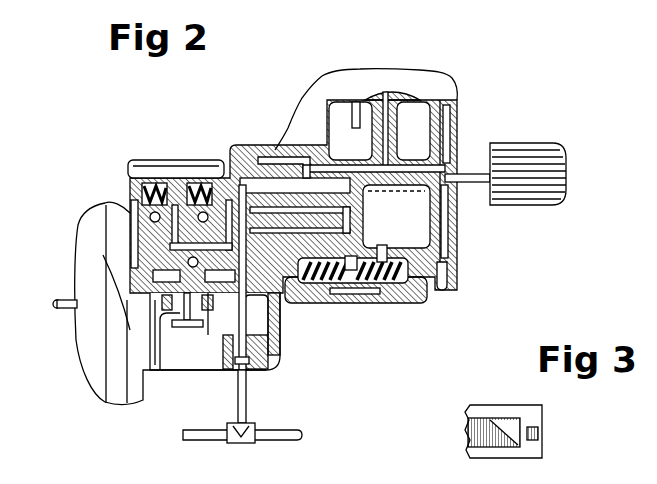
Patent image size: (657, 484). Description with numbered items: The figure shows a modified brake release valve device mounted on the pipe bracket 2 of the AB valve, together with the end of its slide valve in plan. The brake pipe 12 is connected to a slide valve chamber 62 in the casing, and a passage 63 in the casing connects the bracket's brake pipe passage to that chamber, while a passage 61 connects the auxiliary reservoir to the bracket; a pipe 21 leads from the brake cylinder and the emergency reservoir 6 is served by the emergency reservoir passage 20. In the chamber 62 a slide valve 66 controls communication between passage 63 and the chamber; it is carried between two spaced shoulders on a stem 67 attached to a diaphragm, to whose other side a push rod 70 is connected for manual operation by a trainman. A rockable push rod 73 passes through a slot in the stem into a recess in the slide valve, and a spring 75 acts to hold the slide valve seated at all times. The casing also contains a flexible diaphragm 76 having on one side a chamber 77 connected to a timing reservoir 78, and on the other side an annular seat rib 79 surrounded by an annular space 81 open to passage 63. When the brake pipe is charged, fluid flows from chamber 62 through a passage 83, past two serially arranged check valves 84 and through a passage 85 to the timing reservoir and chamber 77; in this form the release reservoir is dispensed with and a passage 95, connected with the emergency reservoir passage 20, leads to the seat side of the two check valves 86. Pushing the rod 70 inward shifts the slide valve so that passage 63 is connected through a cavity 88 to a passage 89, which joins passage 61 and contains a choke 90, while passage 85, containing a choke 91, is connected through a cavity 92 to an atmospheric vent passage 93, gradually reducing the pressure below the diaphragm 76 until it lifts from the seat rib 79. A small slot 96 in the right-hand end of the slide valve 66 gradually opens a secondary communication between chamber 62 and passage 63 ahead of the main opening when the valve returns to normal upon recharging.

In FIG. 2, the pipe bracket 2 is at (352, 70).
In FIG. 2, the emergency reservoir 6 is at (528, 187).
In FIG. 2, the brake pipe 12 is at (272, 437).
In FIG. 2, the emergency reservoir passage 20 is at (387, 112).
In FIG. 2, the pipe 21 is at (352, 126).
In FIG. 2, the passage 61 is at (442, 233).
In FIG. 2, the slide valve chamber 62 is at (278, 357).
In FIG. 2, the passage 63 is at (281, 303).
In FIG. 2, the slide valve 66 is at (268, 373).
In FIG. 3, the slide valve 66 is at (540, 452).
In FIG. 2, the stem 67 is at (167, 358).
In FIG. 2, the push rod 70 is at (60, 310).
In FIG. 2, the rockable push rod 73 is at (190, 343).
In FIG. 2, the spring 75 is at (213, 333).
In FIG. 2, the flexible diaphragm 76 is at (395, 284).
In FIG. 2, the chamber 77 is at (370, 291).
In FIG. 2, the timing reservoir 78 is at (447, 253).
In FIG. 2, the annular seat rib 79 is at (357, 263).
In FIG. 2, the annular space 81 is at (390, 276).
In FIG. 2, the passage 83 is at (152, 222).
In FIG. 2, the check valves 84 is at (148, 170).
In FIG. 2, the passage 85 is at (342, 267).
In FIG. 2, the check valves 86 is at (200, 170).
In FIG. 2, the cavity 88 is at (250, 372).
In FIG. 3, the cavity 88 is at (485, 430).
In FIG. 2, the passage 89 is at (270, 137).
In FIG. 2, the choke 90 is at (190, 262).
In FIG. 2, the choke 91 is at (172, 247).
In FIG. 2, the cavity 92 is at (160, 284).
In FIG. 2, the atmospheric vent passage 93 is at (155, 318).
In FIG. 2, the passage 95 is at (413, 131).
In FIG. 2, the slot 96 is at (268, 323).
In FIG. 3, the slot 96 is at (540, 433).